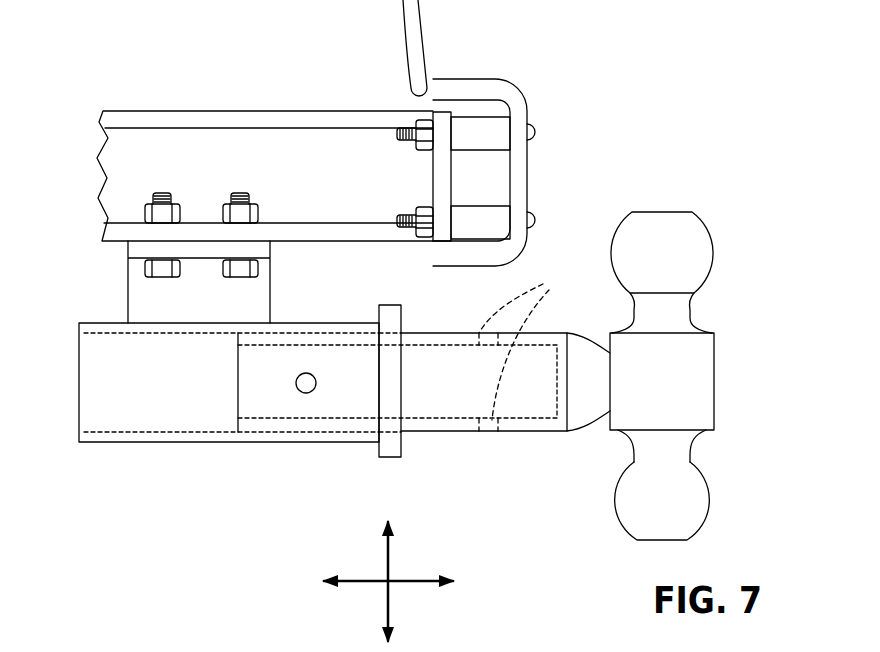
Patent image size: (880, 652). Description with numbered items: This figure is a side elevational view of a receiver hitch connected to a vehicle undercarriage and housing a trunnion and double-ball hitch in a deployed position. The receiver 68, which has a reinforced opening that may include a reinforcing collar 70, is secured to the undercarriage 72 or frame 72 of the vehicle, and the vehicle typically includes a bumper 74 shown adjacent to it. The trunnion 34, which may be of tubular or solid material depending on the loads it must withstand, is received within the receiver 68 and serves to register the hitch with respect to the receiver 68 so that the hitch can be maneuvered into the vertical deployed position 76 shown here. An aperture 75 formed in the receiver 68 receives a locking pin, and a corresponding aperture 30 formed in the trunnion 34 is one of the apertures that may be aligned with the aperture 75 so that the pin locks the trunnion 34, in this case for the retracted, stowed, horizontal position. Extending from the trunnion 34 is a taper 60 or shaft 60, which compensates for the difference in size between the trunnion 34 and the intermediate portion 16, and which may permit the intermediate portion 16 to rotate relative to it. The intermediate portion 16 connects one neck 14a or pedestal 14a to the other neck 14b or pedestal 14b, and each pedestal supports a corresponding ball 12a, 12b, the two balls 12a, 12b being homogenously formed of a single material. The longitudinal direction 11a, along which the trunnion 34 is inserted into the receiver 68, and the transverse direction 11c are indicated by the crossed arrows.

The longitudinal direction 11a is at (418, 585).
The transverse direction 11c is at (390, 560).
The ball 12a is at (703, 258).
The ball 12b is at (703, 510).
The neck 14a is at (683, 313).
The neck 14b is at (680, 460).
The intermediate portion 16 is at (706, 386).
The aperture 30 is at (527, 351).
The trunnion 34 is at (521, 435).
The taper 60 is at (608, 411).
The receiver 68 is at (147, 448).
The reinforcing collar 70 is at (400, 311).
The undercarriage 72 is at (184, 106).
The bumper 74 is at (531, 92).
The aperture 75 is at (301, 397).
The vertical deployed position 76 is at (728, 170).